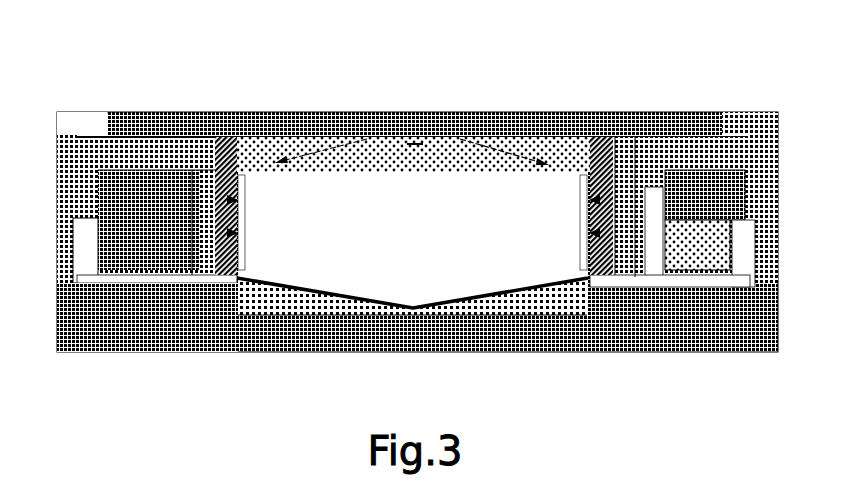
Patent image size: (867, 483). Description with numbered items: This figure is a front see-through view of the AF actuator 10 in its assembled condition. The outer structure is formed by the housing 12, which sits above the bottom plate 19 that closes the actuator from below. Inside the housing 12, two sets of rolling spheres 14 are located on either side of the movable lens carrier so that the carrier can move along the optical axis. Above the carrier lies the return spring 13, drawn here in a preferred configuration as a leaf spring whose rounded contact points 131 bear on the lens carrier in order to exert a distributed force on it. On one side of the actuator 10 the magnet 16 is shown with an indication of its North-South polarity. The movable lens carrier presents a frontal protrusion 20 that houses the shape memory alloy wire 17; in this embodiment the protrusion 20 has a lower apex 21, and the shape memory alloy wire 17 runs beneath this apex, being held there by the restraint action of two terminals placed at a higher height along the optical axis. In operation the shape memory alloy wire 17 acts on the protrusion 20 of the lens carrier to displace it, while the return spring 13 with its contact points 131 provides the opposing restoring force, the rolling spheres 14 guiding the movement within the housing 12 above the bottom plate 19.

The AF actuator 10 is at (417, 212).
The housing 12 is at (135, 111).
The return spring 13 is at (413, 117).
The rounded contact points 131 is at (308, 111).
The rolling spheres 14 is at (194, 353).
The magnet 16 is at (752, 353).
The shape memory alloy wire 17 is at (300, 295).
The bottom plate 19 is at (89, 353).
The frontal protrusion 20 is at (555, 300).
The lower apex 21 is at (378, 353).